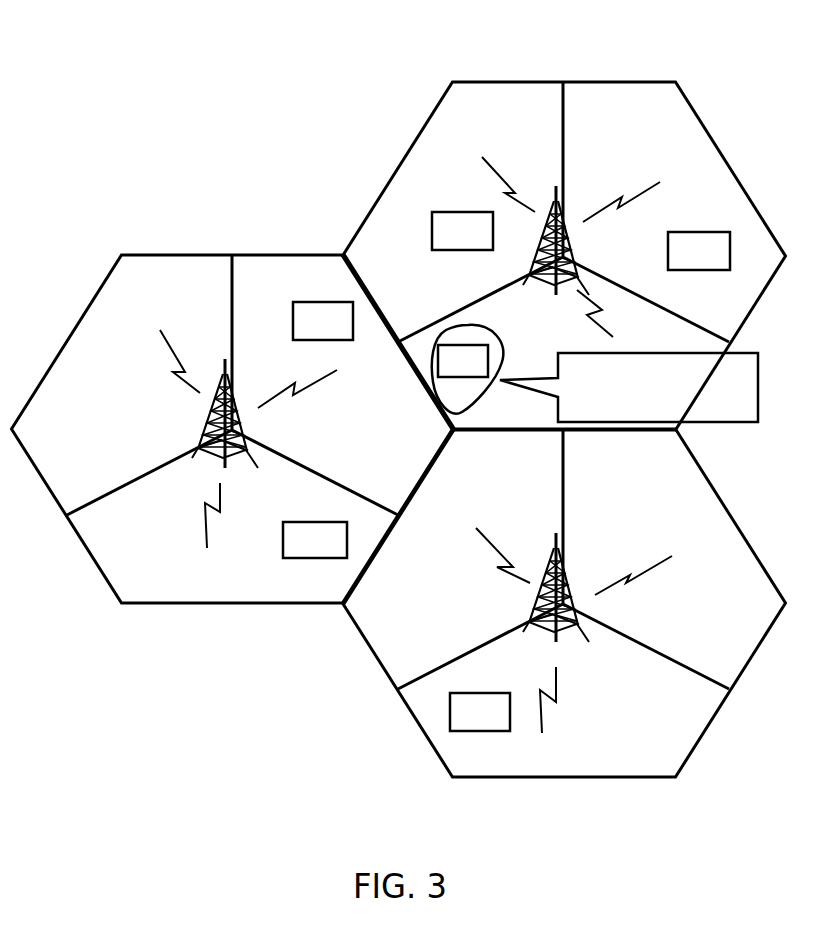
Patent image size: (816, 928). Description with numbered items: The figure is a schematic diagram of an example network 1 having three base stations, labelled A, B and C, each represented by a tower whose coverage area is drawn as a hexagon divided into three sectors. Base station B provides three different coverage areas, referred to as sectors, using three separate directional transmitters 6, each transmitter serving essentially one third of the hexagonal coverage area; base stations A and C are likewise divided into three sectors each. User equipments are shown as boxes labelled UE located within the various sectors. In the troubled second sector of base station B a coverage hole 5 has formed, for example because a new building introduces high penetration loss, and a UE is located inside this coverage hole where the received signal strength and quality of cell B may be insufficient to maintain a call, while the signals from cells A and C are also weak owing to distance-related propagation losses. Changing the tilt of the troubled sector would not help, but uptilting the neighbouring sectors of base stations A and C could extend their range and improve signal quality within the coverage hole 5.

The network 1 is at (624, 782).
The coverage hole 5 is at (438, 341).
The directional transmitters 6 is at (630, 197).